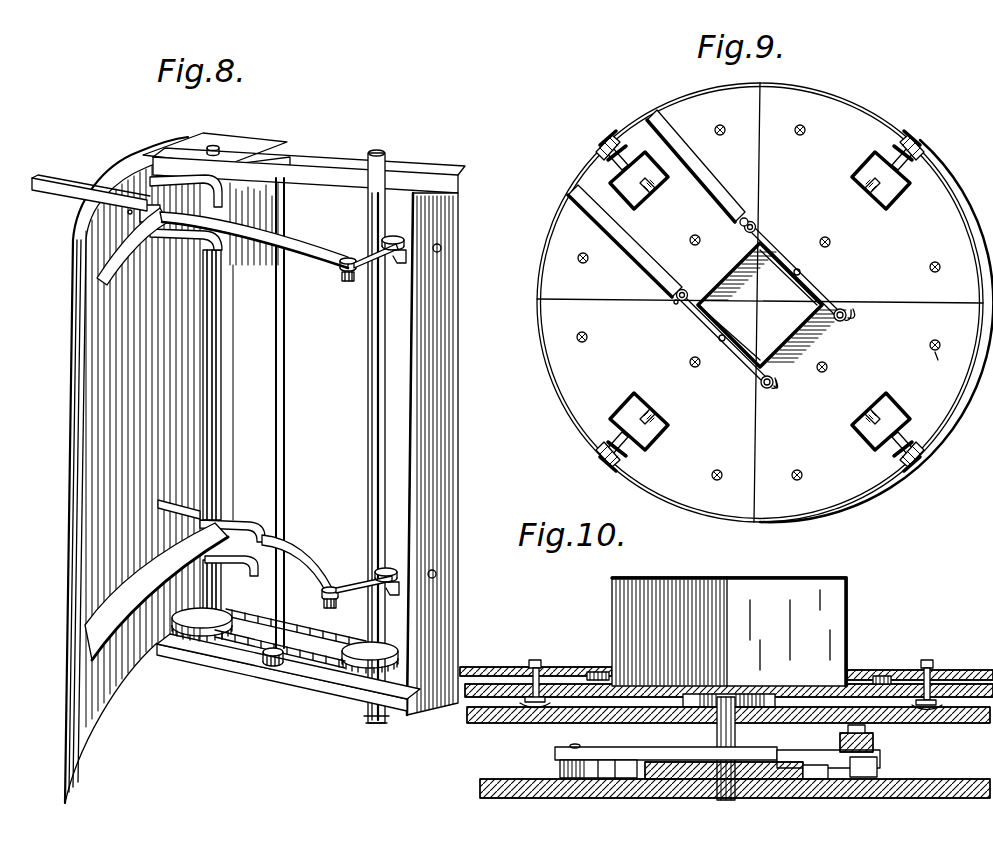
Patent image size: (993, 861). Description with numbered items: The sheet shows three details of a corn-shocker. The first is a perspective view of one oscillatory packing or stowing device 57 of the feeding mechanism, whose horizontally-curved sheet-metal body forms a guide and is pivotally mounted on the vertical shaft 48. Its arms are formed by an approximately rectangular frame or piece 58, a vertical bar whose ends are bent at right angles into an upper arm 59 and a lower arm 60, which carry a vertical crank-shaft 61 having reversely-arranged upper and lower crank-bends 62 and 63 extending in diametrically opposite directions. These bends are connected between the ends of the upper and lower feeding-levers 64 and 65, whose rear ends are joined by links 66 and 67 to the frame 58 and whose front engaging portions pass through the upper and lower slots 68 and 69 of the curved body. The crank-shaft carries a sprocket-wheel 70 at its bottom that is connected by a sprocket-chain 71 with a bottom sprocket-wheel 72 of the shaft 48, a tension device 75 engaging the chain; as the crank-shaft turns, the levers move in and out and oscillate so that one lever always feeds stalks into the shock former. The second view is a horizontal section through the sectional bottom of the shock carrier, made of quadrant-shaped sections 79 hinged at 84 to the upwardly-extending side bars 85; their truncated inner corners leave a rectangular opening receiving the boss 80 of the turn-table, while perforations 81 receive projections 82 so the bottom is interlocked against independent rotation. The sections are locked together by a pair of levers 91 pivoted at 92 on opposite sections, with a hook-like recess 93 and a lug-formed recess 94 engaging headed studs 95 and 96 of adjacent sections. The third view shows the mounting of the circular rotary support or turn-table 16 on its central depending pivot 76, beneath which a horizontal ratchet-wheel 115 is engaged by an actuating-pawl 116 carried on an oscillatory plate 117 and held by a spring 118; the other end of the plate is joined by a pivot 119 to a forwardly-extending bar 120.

In FIG. 10, the rotary support or turn-table 16 is at (502, 706).
In FIG. 8, the vertical shaft 48 is at (370, 410).
In FIG. 8, the packing or stowing device 57 is at (155, 468).
In FIG. 8, the rectangular frame or piece 58 is at (463, 425).
In FIG. 8, the upper arm 59 is at (313, 170).
In FIG. 8, the lower arm 60 is at (306, 683).
In FIG. 8, the vertical crank-shaft 61 is at (212, 443).
In FIG. 8, the upper crank-bend 62 is at (181, 212).
In FIG. 8, the lower crank-bend 63 is at (245, 520).
In FIG. 8, the upper feeding-lever 64 is at (303, 252).
In FIG. 8, the lower feeding-lever 65 is at (307, 557).
In FIG. 8, the link 66 is at (371, 258).
In FIG. 8, the link 67 is at (357, 578).
In FIG. 8, the upper slot 68 is at (102, 250).
In FIG. 8, the lower slot 69 is at (156, 591).
In FIG. 8, the sprocket-wheel 70 is at (197, 610).
In FIG. 8, the sprocket-chain 71 is at (290, 631).
In FIG. 8, the bottom sprocket-wheel 72 is at (357, 641).
In FIG. 8, the tension device 75 is at (263, 663).
In FIG. 10, the central depending pivot 76 is at (718, 737).
In FIG. 9, the bottom section 79 is at (765, 302).
In FIG. 10, the bottom section 79 is at (490, 666).
In FIG. 9, the rectangular boss or enlargement 80 is at (772, 305).
In FIG. 10, the rectangular boss or enlargement 80 is at (848, 612).
In FIG. 9, the perforation 81 is at (935, 351).
In FIG. 10, the perforation 81 is at (542, 675).
In FIG. 9, the projection 82 is at (800, 136).
In FIG. 10, the projection 82 is at (534, 666).
In FIG. 9, the hinge 84 is at (612, 178).
In FIG. 9, the side bar 85 is at (613, 145).
In FIG. 9, the locking lever 91 is at (708, 168).
In FIG. 10, the locking lever 91 is at (596, 670).
In FIG. 9, the pivot 92 is at (818, 287).
In FIG. 9, the recess 93 is at (852, 316).
In FIG. 9, the recess 94 is at (745, 228).
In FIG. 9, the headed projection or stud 95 is at (674, 303).
In FIG. 10, the headed projection or stud 95 is at (729, 698).
In FIG. 9, the headed projection or stud 96 is at (753, 223).
In FIG. 10, the headed projection or stud 96 is at (789, 705).
In FIG. 10, the horizontal ratchet-wheel 115 is at (770, 783).
In FIG. 10, the actuating-pawl 116 is at (635, 763).
In FIG. 10, the oscillatory plate or member 117 is at (612, 757).
In FIG. 10, the spring 118 is at (600, 768).
In FIG. 10, the pivot 119 is at (878, 773).
In FIG. 10, the bar 120 is at (873, 748).